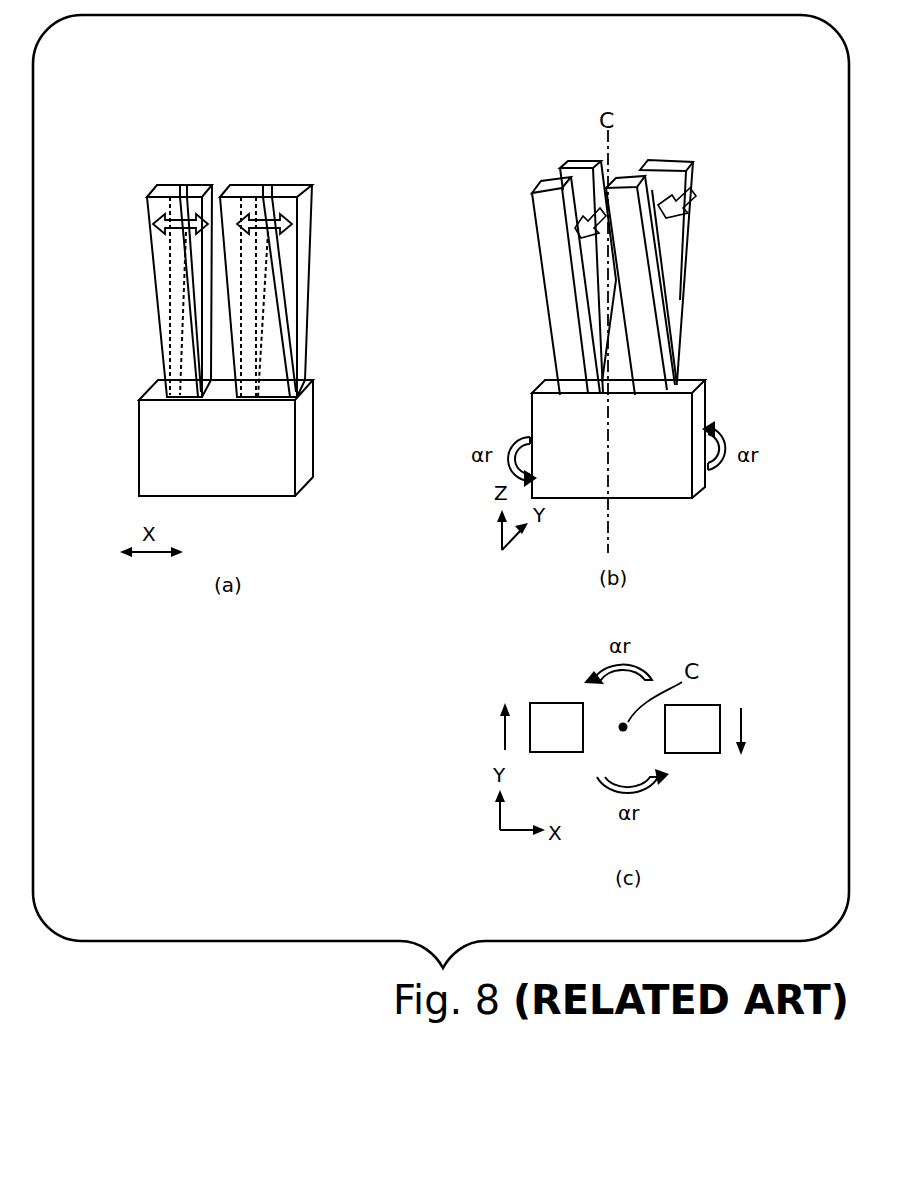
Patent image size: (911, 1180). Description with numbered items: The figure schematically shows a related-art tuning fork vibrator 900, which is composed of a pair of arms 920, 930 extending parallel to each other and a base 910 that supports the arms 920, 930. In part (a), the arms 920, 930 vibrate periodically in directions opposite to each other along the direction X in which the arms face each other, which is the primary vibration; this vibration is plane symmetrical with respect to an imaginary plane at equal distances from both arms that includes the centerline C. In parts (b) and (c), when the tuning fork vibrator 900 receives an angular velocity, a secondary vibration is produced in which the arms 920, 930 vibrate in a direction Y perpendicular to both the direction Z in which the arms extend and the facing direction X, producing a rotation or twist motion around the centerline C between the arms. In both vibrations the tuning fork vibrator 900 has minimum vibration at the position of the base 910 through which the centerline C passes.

The tuning fork vibrator 900 is at (126, 137).
The base 910 is at (143, 440).
The arm 920 is at (169, 185).
The arm 930 is at (298, 185).